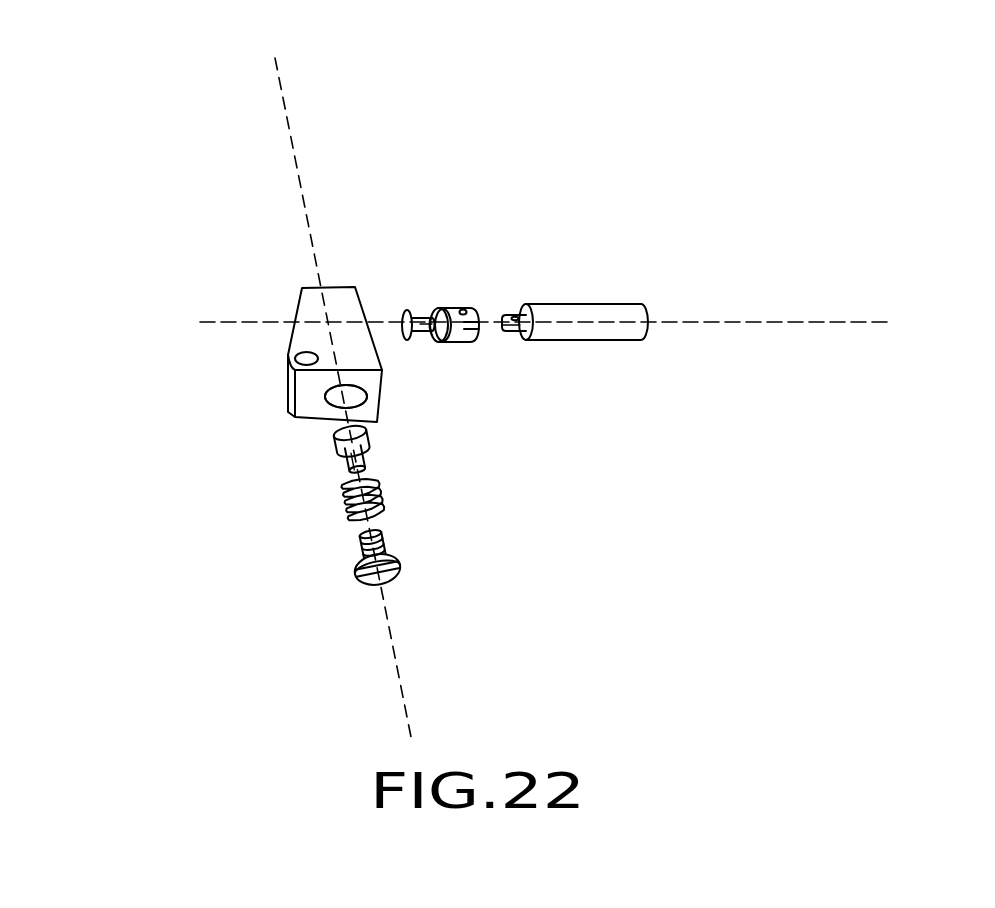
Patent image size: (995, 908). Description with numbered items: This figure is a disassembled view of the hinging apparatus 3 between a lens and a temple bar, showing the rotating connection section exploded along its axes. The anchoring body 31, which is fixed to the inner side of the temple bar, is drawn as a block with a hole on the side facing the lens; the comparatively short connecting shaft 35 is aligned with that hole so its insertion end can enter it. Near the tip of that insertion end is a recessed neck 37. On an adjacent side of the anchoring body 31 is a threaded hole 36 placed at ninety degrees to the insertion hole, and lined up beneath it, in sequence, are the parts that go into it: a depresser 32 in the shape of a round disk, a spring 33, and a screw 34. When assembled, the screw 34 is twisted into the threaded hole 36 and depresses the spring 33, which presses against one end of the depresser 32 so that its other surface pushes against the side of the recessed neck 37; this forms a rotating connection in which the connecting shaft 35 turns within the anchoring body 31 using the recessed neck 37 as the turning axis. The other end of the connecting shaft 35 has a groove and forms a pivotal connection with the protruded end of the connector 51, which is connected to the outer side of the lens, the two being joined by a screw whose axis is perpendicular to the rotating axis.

The cutter assembly 3 is at (742, 142).
The anchoring body 31 is at (308, 338).
The depresser 32 is at (372, 452).
The spring 33 is at (341, 499).
The screw 34 is at (355, 569).
The connecting shaft 35 is at (445, 310).
The threaded hole 36 is at (362, 395).
The recessed neck 37 is at (415, 311).
The connector 51 is at (582, 312).